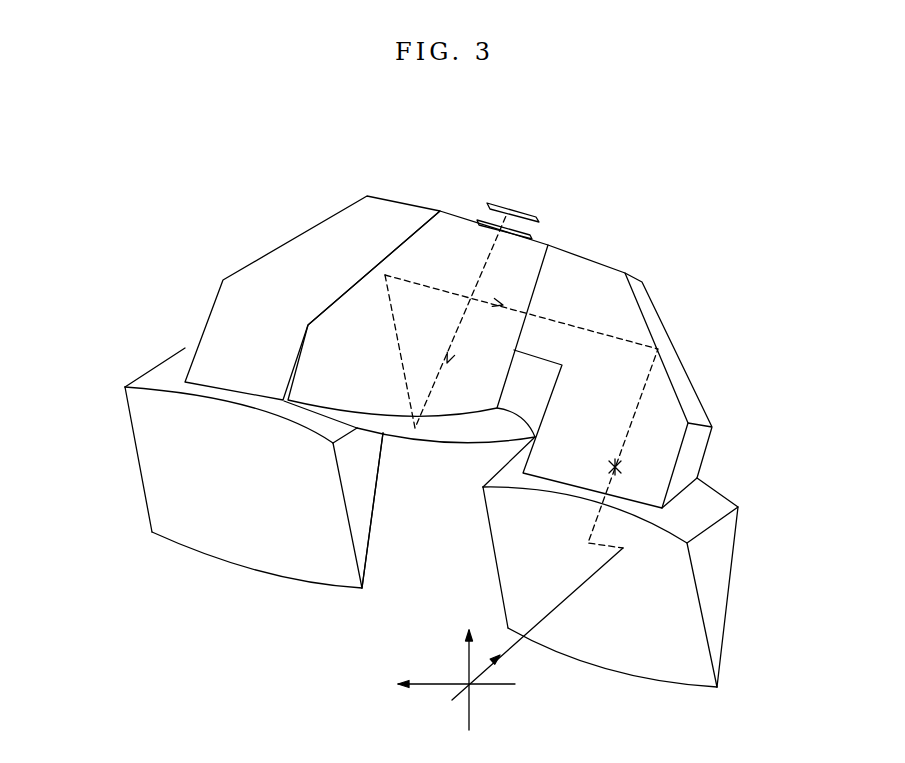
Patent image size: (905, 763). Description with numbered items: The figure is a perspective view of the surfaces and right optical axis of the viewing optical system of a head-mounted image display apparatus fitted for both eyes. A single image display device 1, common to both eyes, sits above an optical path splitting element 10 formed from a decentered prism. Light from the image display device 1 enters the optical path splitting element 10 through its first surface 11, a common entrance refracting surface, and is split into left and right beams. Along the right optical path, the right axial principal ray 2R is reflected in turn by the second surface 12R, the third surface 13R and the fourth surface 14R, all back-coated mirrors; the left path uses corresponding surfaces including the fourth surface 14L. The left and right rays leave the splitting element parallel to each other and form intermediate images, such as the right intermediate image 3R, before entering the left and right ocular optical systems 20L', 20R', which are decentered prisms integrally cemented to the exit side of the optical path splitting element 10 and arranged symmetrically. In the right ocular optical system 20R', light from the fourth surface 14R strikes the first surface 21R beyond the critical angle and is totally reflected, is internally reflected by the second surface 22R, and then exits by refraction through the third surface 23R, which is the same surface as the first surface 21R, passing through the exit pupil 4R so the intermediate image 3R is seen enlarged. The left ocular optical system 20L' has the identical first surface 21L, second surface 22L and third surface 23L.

The image display device 1 is at (528, 213).
The first surface 11 is at (535, 235).
The optical path splitting element 10 is at (631, 365).
The third surface 13R is at (375, 266).
The fourth surface 14L is at (325, 221).
The fourth surface 14R is at (679, 378).
The second surface 12R is at (442, 430).
The right axial principal ray 2R is at (457, 340).
The intermediate image 3R is at (646, 466).
The exit pupil 4R is at (488, 699).
The left ocular optical system 20L' is at (244, 489).
The right ocular optical system 20R' is at (650, 589).
The first surface 21L is at (257, 581).
The third surface 23L is at (245, 568).
The first surface 21R is at (627, 684).
The third surface 23R is at (677, 672).
The second surface 22L is at (376, 510).
The second surface 22R is at (740, 542).